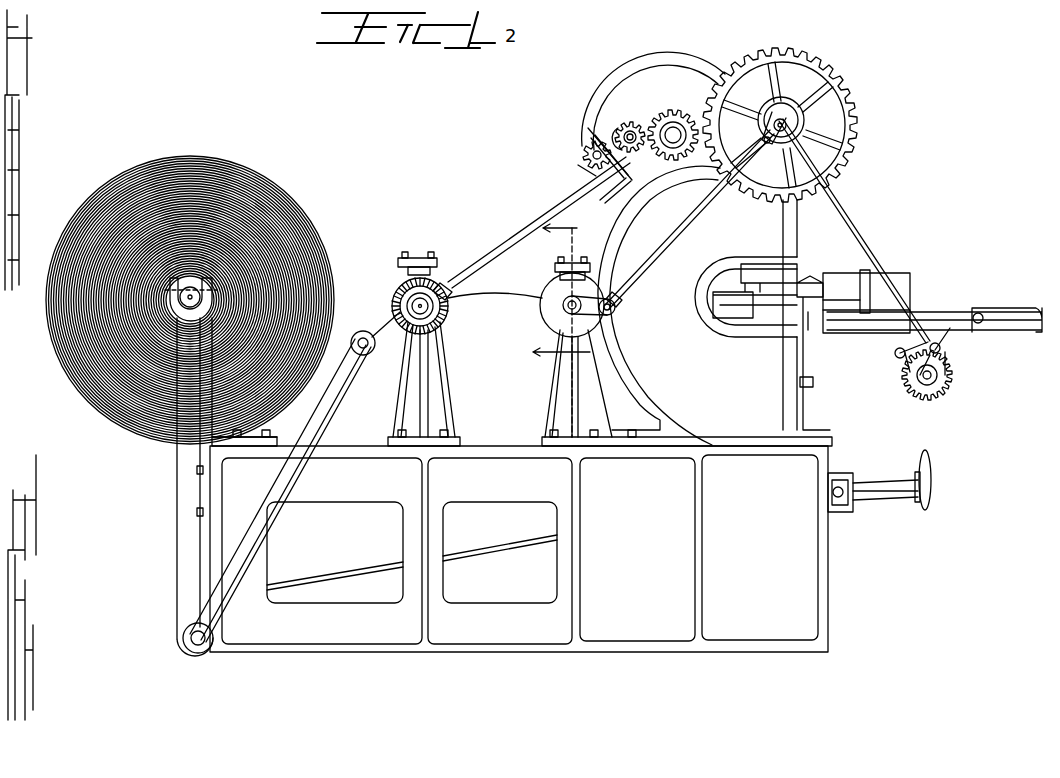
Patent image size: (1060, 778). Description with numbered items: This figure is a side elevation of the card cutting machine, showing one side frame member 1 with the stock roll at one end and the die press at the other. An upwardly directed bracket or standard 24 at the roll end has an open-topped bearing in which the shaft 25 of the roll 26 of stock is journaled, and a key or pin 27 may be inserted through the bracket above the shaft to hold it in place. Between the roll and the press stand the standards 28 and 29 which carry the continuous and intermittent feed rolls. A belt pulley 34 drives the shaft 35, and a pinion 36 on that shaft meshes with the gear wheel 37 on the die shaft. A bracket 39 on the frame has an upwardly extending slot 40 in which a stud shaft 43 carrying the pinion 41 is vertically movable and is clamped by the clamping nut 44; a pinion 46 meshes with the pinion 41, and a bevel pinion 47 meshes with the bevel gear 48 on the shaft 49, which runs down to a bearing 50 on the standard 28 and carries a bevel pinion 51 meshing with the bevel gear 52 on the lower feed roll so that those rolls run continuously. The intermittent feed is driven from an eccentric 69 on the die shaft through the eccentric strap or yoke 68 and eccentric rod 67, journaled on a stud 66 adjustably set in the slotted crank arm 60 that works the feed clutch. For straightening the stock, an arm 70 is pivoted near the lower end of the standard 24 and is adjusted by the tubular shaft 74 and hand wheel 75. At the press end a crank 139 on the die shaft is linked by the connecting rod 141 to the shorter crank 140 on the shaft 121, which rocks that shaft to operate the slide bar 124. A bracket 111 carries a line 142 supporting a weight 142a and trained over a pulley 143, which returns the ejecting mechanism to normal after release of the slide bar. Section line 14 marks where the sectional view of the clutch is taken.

The side frame member 1 is at (810, 563).
The section line 14— 14 is at (569, 328).
The bracket or standard 24 is at (178, 522).
The shaft 25 is at (212, 296).
The roll of stock 26 is at (213, 293).
The key or pin 27 is at (200, 278).
The standard 28 is at (447, 407).
The standard 29 is at (550, 402).
The belt pulley 34 is at (660, 53).
The shaft 35 is at (676, 128).
The pinion 36 is at (678, 118).
The gear wheel 37 is at (850, 98).
The bracket 39 is at (610, 188).
The slot 40 is at (628, 128).
The pinion 41 is at (613, 130).
The stud shaft 43 is at (590, 150).
The clamping nut 44 is at (622, 122).
The pinion 46 is at (580, 162).
The bevel pinion 47 is at (577, 177).
The bevel gear 48 is at (593, 147).
The shaft 49 is at (493, 240).
The bearing 50 is at (450, 277).
The bevel pinion 51 is at (495, 287).
The bevel gear 52 is at (402, 287).
The crank arm 60 is at (615, 315).
The stud 66 is at (609, 280).
The eccentric rod 67 is at (642, 270).
The eccentric strap or yoke 68 is at (800, 102).
The eccentric 69 is at (782, 100).
The arm 70 is at (278, 518).
The tubular shaft 74 is at (873, 499).
The hand wheel 75 is at (932, 493).
The plate or bracket 111 is at (827, 293).
The shaft 121 is at (928, 382).
The slide bar 124 is at (935, 318).
The crank 139 is at (813, 100).
The crank 140 is at (940, 357).
The connecting rod 141 is at (850, 220).
The line 142 is at (808, 358).
The weight 142a is at (815, 380).
The pulley 143 is at (808, 332).